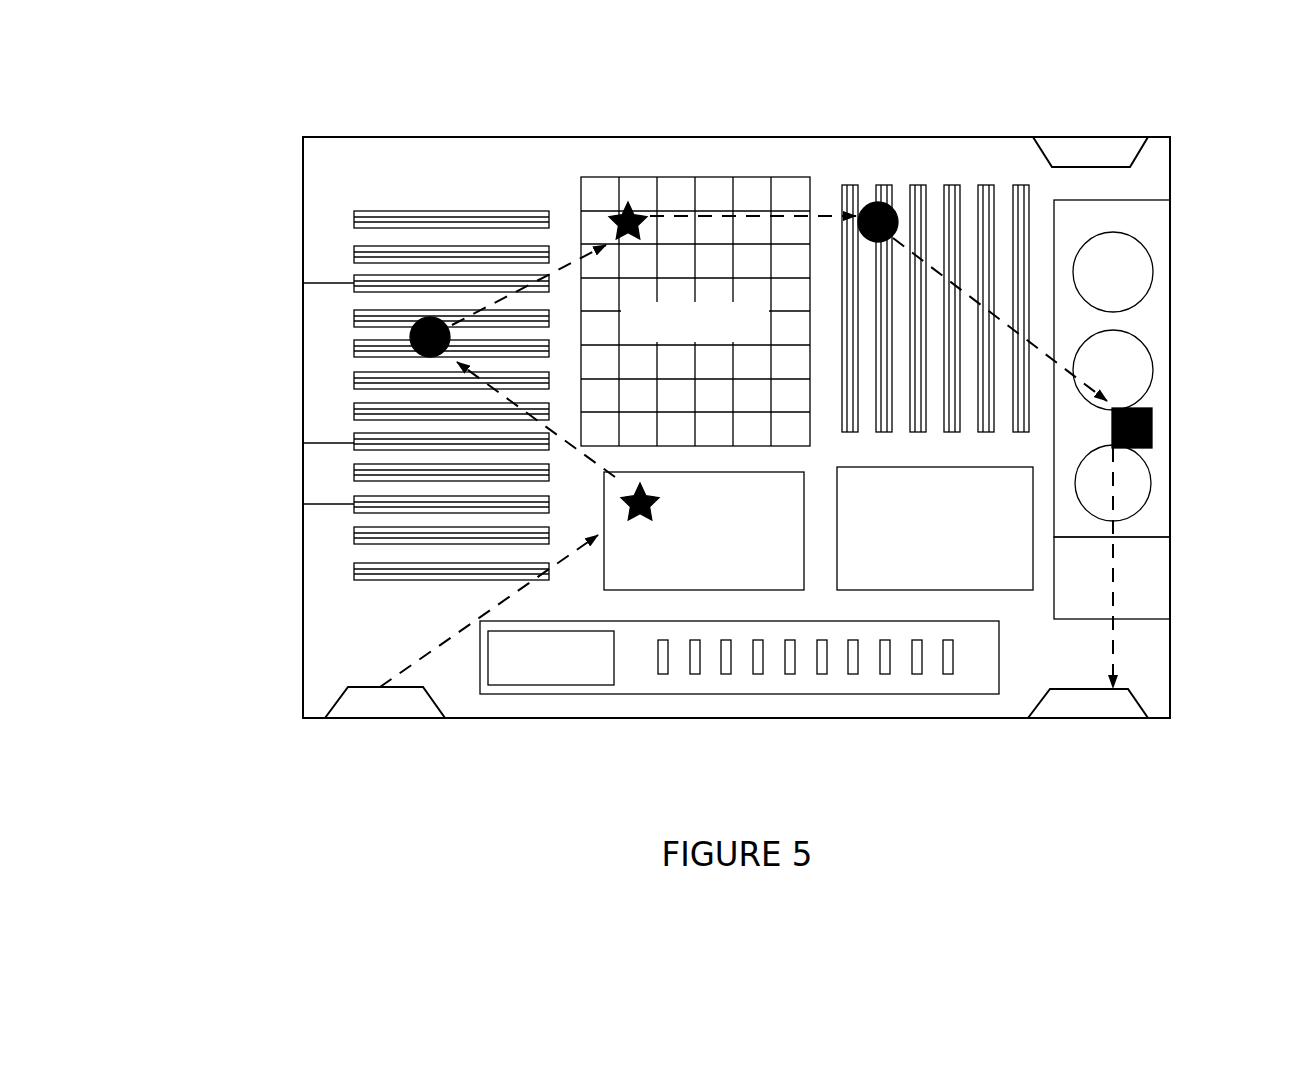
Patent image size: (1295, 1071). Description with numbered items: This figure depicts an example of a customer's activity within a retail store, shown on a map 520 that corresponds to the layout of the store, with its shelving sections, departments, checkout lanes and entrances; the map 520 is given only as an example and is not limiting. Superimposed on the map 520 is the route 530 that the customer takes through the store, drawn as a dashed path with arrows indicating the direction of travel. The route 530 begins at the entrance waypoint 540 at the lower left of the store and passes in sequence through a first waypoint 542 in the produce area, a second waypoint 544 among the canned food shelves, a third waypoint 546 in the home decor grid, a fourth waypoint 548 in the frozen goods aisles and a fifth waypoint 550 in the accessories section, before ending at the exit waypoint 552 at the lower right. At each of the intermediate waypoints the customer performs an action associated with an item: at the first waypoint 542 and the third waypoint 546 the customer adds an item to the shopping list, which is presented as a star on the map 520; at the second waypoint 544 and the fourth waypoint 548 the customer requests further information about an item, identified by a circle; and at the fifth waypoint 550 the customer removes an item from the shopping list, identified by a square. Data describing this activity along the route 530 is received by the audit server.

The map 520 is at (253, 66).
The route 530 is at (460, 632).
The entrance waypoint 540 is at (375, 687).
The first waypoint 542 is at (630, 517).
The second waypoint 544 is at (412, 330).
The third waypoint 546 is at (612, 205).
The fourth waypoint 548 is at (895, 210).
The fifth waypoint 550 is at (1150, 410).
The exit waypoint 552 is at (1115, 648).